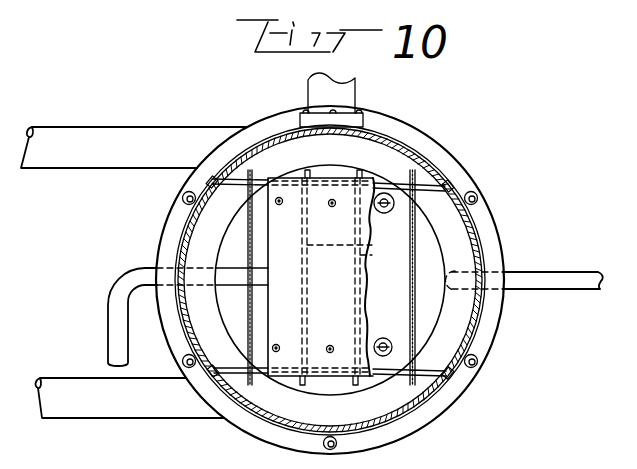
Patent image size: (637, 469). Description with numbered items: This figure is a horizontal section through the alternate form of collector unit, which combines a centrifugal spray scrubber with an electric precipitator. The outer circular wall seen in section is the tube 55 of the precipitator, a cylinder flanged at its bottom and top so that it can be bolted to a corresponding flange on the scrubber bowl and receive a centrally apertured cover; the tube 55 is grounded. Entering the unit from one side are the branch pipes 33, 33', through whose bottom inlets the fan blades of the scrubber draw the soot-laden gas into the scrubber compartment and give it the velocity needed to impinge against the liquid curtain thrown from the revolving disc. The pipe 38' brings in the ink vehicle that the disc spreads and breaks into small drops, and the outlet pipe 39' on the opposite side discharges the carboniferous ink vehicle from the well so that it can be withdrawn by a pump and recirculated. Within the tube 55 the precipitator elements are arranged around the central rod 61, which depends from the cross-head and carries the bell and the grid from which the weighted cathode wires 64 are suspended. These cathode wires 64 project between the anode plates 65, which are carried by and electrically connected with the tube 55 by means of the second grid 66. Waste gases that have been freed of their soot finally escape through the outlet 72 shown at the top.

The branch pipe 33 is at (134, 133).
The branch pipe 33' is at (130, 385).
The pipe 38' is at (165, 317).
The outlet pipe 39' is at (524, 303).
The tube 55 is at (478, 233).
The rod 61 is at (330, 284).
The weighted cathode wire 64 is at (383, 194).
The anode plate 65 is at (413, 263).
The second grid 66 is at (232, 184).
The outlet 72 is at (309, 93).